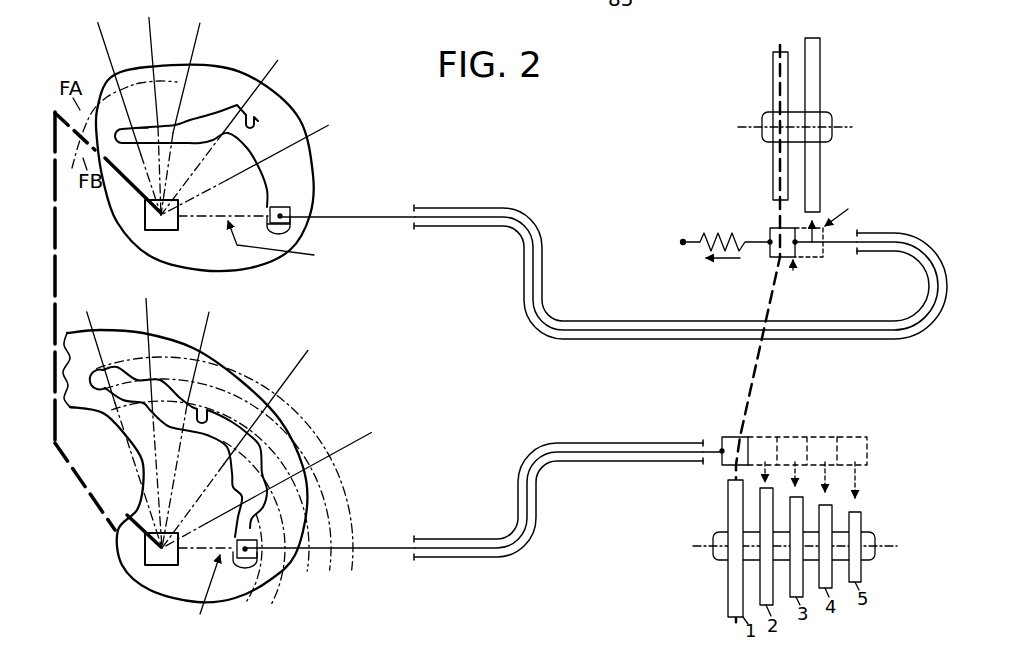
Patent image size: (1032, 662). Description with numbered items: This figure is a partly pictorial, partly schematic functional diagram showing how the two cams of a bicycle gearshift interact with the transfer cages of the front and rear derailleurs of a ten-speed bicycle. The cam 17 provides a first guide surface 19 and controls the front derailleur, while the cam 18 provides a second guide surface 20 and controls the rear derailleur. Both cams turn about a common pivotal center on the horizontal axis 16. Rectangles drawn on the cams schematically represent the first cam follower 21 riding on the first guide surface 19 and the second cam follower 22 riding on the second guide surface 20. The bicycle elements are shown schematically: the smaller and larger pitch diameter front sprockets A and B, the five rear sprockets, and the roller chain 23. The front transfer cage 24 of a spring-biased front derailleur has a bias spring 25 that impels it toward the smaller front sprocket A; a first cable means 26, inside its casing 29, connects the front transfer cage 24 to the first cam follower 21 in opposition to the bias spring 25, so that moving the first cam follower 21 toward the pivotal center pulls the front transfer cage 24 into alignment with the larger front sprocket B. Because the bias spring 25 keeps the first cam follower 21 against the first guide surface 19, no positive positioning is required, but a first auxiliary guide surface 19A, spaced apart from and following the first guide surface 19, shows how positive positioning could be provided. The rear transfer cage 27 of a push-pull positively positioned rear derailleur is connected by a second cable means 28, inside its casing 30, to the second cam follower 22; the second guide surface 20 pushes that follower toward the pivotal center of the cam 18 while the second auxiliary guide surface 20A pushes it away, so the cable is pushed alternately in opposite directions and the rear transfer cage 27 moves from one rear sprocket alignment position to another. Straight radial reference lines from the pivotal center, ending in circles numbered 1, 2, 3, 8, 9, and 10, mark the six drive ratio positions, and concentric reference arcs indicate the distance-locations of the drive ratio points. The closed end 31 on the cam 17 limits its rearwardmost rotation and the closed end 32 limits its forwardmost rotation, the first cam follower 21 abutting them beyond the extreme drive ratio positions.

The drive ratio position radial reference line 1 is at (765, 406).
The drive ratio position radial reference line 2 is at (802, 406).
The drive ratio position radial reference line 3 is at (840, 407).
The drive ratio position radial reference line 8 is at (517, 274).
The drive ratio position radial reference line 9 is at (878, 408).
The drive ratio position radial reference line 10 is at (913, 407).
The horizontal axis 16 is at (58, 236).
The cam 17 is at (215, 67).
The cam 18 is at (281, 413).
The first guide surface 19 is at (253, 122).
The first auxiliary guide surface 19A is at (248, 146).
The second guide surface 20 is at (222, 366).
The second auxiliary guide surface 20A is at (209, 405).
The first cam follower 21 is at (282, 207).
The second cam follower 22 is at (250, 528).
The roller chain 23 is at (752, 362).
The front transfer cage 24 is at (772, 257).
The bias spring 25 is at (723, 230).
The first cable means 26 is at (385, 214).
The rear transfer cage 27 is at (722, 466).
The second cable means 28 is at (385, 545).
The casing 29 is at (536, 240).
The casing 30 is at (530, 452).
The closed end 31 is at (281, 233).
The closed end 32 is at (145, 128).
The smaller pitch diameter front sprocket A is at (775, 60).
The larger pitch diameter front sprocket B is at (822, 55).